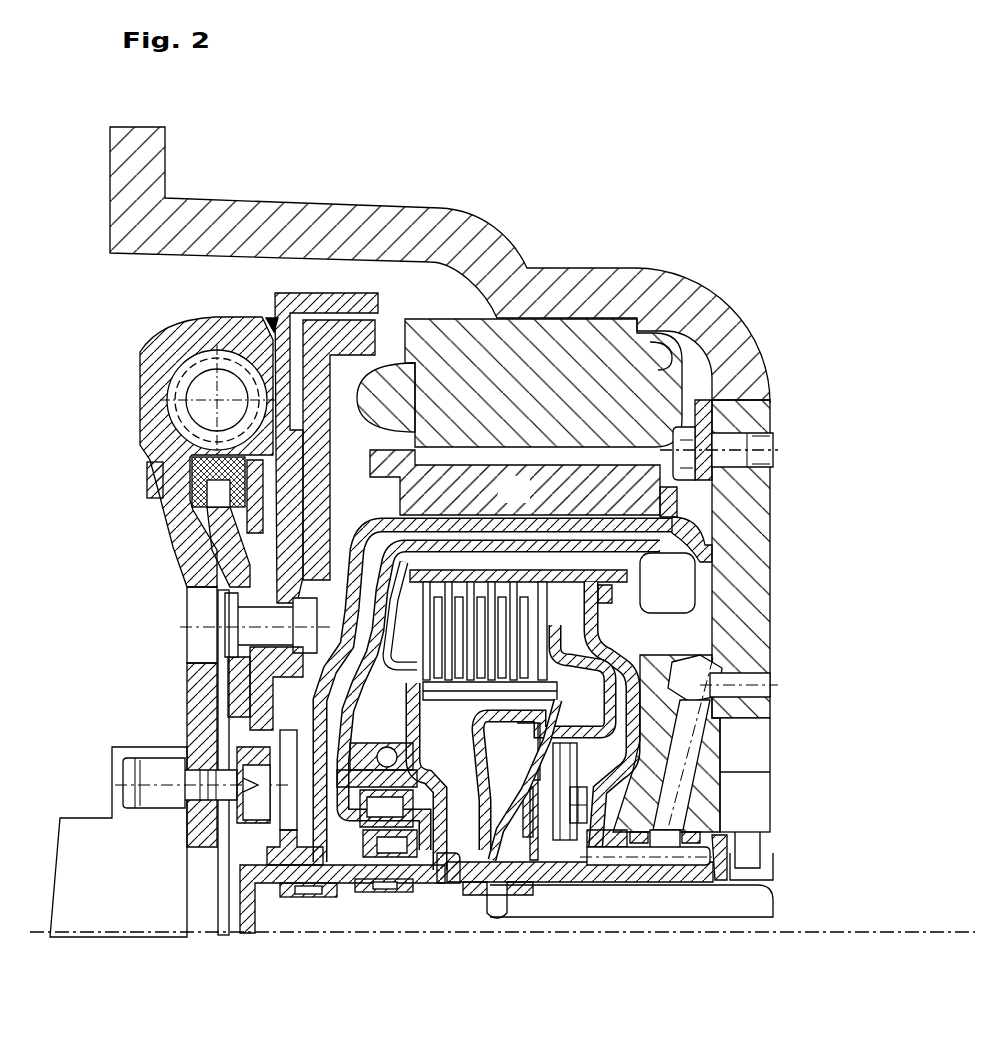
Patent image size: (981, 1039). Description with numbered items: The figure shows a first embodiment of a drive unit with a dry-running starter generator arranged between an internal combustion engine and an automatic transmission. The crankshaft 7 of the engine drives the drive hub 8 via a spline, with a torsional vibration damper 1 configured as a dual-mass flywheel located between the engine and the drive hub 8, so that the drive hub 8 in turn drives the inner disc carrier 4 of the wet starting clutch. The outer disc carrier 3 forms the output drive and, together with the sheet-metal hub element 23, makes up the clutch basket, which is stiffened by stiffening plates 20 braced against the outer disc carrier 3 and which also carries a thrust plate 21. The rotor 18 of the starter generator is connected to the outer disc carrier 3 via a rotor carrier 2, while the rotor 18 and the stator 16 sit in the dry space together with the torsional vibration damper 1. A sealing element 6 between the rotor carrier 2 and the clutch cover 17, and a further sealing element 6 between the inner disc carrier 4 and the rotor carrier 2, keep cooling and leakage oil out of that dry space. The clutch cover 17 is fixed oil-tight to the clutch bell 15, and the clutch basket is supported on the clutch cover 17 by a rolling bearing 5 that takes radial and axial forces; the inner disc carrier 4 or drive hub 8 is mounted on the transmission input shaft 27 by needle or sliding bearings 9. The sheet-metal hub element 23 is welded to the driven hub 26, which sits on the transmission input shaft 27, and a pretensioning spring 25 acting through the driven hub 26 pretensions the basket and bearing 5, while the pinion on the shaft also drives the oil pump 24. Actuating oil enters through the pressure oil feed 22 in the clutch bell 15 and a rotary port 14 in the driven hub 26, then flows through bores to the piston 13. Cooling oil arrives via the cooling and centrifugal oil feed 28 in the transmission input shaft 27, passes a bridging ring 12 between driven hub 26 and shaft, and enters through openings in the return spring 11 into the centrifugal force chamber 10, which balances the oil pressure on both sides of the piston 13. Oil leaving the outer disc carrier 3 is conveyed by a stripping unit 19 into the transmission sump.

The torsional vibration damper 1 is at (140, 380).
The rotor carrier 2 is at (378, 527).
The outer disc carrier 3 is at (413, 620).
The inner disc carrier 4 is at (413, 712).
The rolling bearing 5 is at (388, 747).
The sealing element 6 is at (358, 822).
The crankshaft 7 is at (132, 883).
The drive hub 8 is at (250, 922).
The rolling bearing 9 is at (307, 897).
The centrifugal force chamber 10 is at (473, 822).
The return spring 11 is at (507, 848).
The bridging ring 12 is at (495, 897).
The piston 13 is at (543, 848).
The rotary port 14 is at (660, 840).
The clutch bell 15 is at (650, 300).
The stator of starter generator 16 is at (665, 352).
The clutch cover 17 is at (705, 415).
The rotor of starter generator 18 is at (527, 501).
The stripping unit 19 is at (680, 572).
The stiffening plate 20 is at (567, 597).
The thrust plate 21 is at (618, 698).
The pressure oil feed 22 is at (757, 680).
The sheet-metal hub element 23 is at (627, 713).
The oil pump 24 is at (758, 809).
The pretensioning spring 25 is at (722, 848).
The driven hub 26 is at (690, 873).
The transmission input shaft 27 is at (745, 898).
The cooling and centrifugal oil feed 28 is at (740, 922).